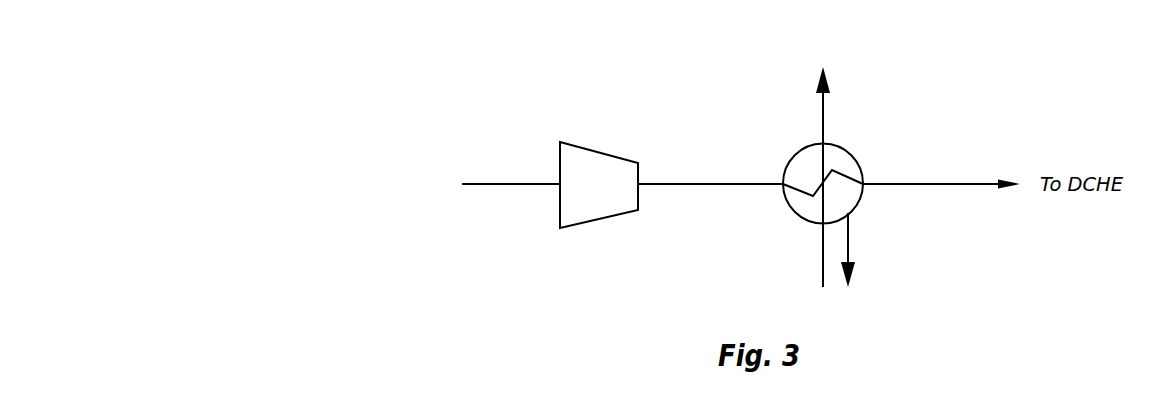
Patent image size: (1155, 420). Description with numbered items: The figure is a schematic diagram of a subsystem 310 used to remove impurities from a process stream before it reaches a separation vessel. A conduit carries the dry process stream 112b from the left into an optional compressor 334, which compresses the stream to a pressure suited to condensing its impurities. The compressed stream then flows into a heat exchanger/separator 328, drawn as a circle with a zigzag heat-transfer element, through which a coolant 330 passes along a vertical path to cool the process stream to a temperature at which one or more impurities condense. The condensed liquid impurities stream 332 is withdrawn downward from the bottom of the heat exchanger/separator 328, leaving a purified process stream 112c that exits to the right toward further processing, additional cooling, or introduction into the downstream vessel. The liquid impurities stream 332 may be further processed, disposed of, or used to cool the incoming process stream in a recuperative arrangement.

The subsystem 310 is at (507, 82).
The dry process stream 112b is at (525, 183).
The compressor 334 is at (610, 155).
The purified process stream 112c is at (963, 183).
The heat exchanger/separator 328 is at (792, 210).
The coolant 330 is at (823, 242).
The liquid impurities stream 332 is at (848, 242).